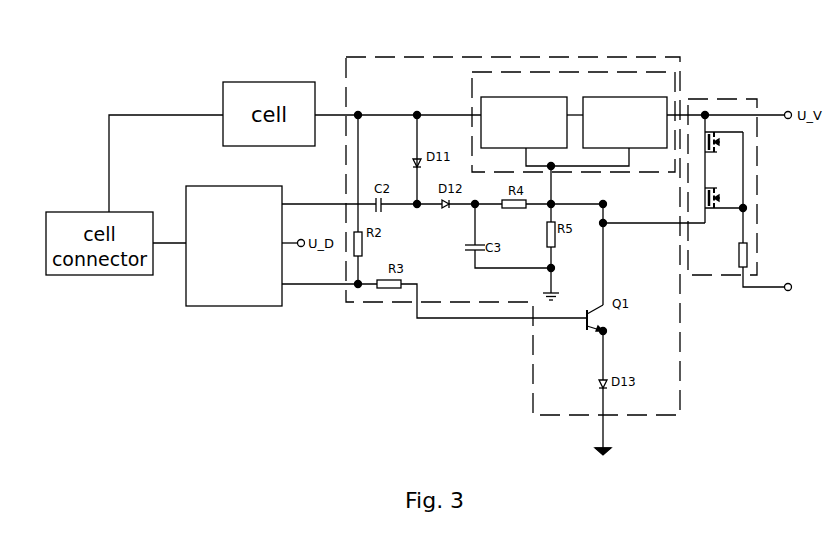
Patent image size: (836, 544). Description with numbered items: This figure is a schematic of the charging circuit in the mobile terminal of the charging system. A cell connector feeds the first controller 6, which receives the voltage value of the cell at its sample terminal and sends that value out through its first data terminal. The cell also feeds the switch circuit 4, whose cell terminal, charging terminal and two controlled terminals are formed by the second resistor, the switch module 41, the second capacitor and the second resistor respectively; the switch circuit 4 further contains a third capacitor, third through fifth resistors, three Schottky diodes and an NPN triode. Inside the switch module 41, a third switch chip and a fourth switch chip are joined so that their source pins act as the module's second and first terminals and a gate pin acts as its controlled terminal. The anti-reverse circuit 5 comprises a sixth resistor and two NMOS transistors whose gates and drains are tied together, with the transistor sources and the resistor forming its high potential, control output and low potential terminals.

The switch circuit 4 is at (513, 225).
The switch module 41 is at (604, 114).
The anti-reverse circuit 5 is at (755, 197).
The first controller 6 is at (243, 249).